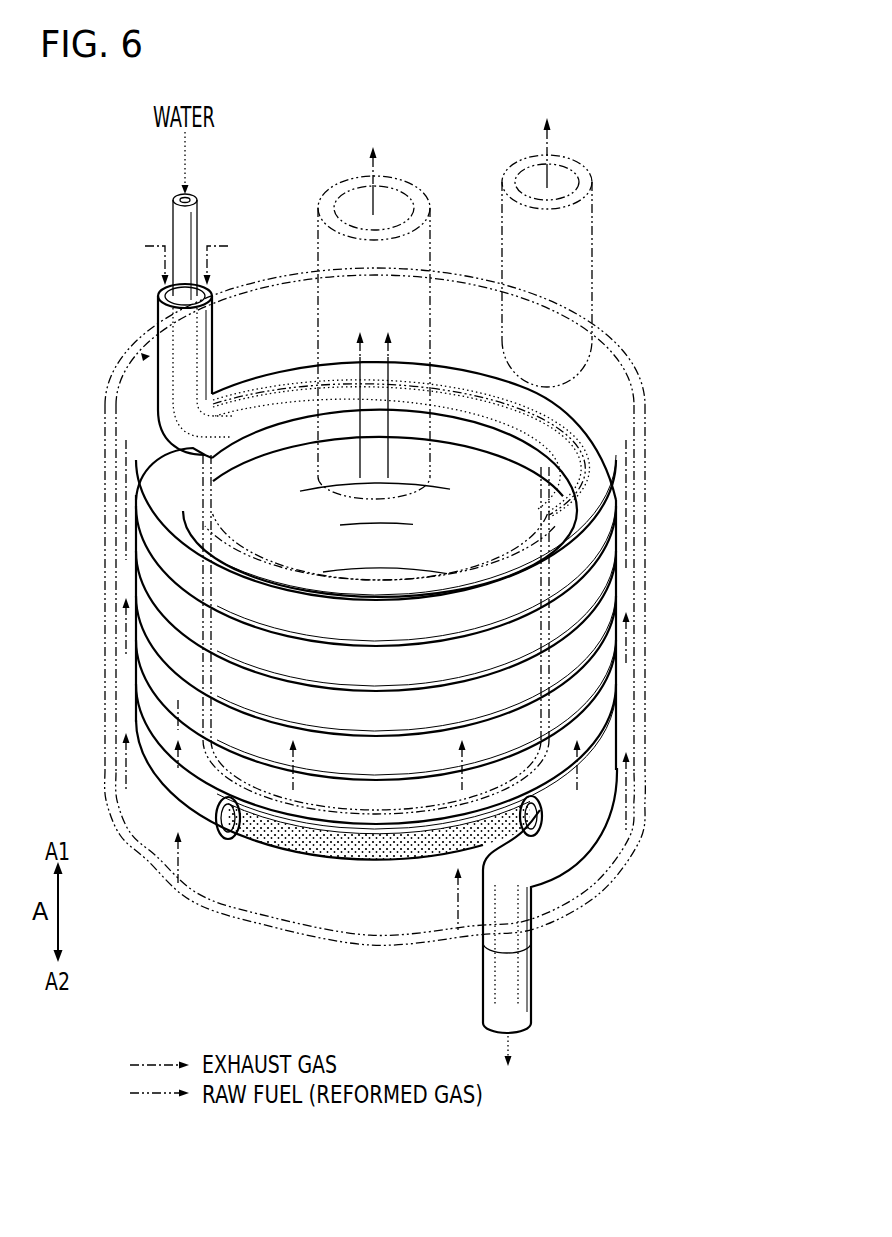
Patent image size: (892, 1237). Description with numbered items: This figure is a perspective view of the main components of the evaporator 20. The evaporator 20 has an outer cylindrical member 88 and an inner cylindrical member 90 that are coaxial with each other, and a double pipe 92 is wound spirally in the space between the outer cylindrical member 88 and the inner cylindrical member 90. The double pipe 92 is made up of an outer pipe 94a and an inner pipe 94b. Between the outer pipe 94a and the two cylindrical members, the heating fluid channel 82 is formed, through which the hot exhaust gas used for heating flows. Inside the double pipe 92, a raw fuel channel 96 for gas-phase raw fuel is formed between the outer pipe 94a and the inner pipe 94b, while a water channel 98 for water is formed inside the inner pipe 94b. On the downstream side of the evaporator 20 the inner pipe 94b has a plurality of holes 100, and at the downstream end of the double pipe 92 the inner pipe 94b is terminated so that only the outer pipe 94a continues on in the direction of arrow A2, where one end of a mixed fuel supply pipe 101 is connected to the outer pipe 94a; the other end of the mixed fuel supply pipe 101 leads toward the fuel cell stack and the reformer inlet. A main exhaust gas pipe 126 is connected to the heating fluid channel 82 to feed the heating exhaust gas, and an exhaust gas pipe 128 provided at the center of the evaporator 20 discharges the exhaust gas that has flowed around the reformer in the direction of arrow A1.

The evaporator 20 is at (274, 193).
The heating fluid channel 82 is at (126, 652).
The outer cylindrical member 88 is at (648, 558).
The inner cylindrical member 90 is at (522, 484).
The double pipe 92 is at (125, 372).
The outer pipe 94a is at (140, 562).
The inner pipe 94b is at (350, 862).
The raw fuel channel 96 is at (228, 840).
The water channel 98 is at (420, 864).
The holes 100 is at (305, 857).
The mixed fuel supply pipe 101 is at (510, 987).
The main exhaust gas pipe 126 is at (588, 262).
The exhaust gas pipe 128 is at (318, 254).